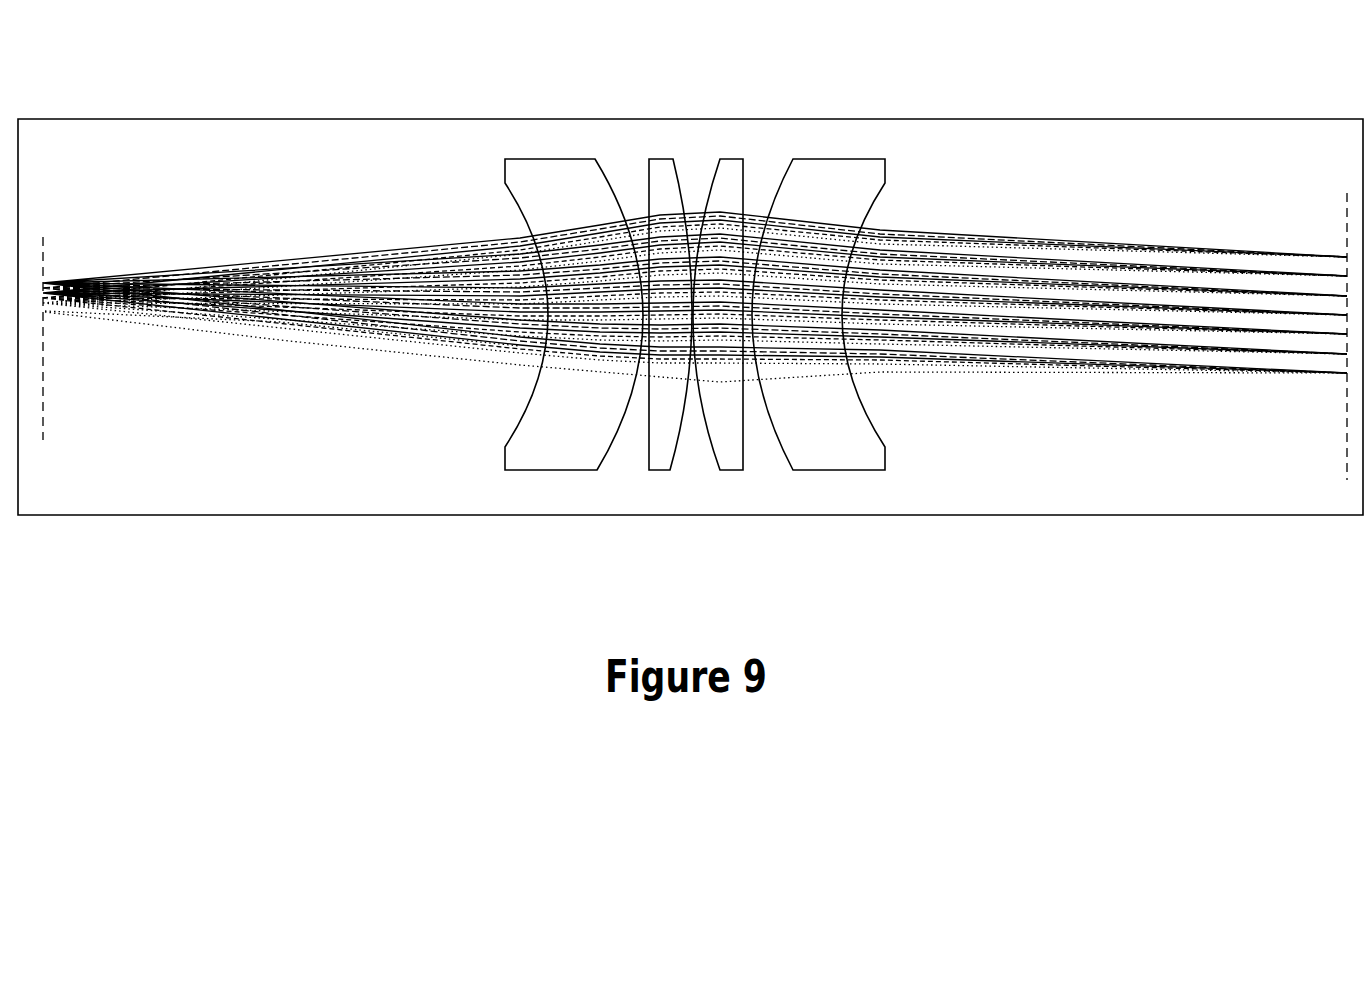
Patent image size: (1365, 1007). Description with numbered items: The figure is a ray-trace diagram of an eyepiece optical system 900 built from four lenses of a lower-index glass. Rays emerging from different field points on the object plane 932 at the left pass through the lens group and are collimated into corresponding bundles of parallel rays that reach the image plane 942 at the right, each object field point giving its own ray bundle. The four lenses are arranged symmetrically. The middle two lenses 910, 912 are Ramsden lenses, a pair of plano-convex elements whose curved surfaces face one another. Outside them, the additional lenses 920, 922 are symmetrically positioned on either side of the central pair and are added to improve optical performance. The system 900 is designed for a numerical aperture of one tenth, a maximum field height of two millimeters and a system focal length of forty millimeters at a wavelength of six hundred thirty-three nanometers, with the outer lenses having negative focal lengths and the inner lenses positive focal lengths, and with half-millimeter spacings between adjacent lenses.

The eyepiece optical system 900 is at (188, 76).
The first Ramsden lens 910 is at (648, 436).
The second Ramsden lens 912 is at (716, 438).
The first additional lens 920 is at (527, 426).
The second additional lens 922 is at (872, 428).
The object plane 932 is at (44, 418).
The image plane 942 is at (1345, 222).